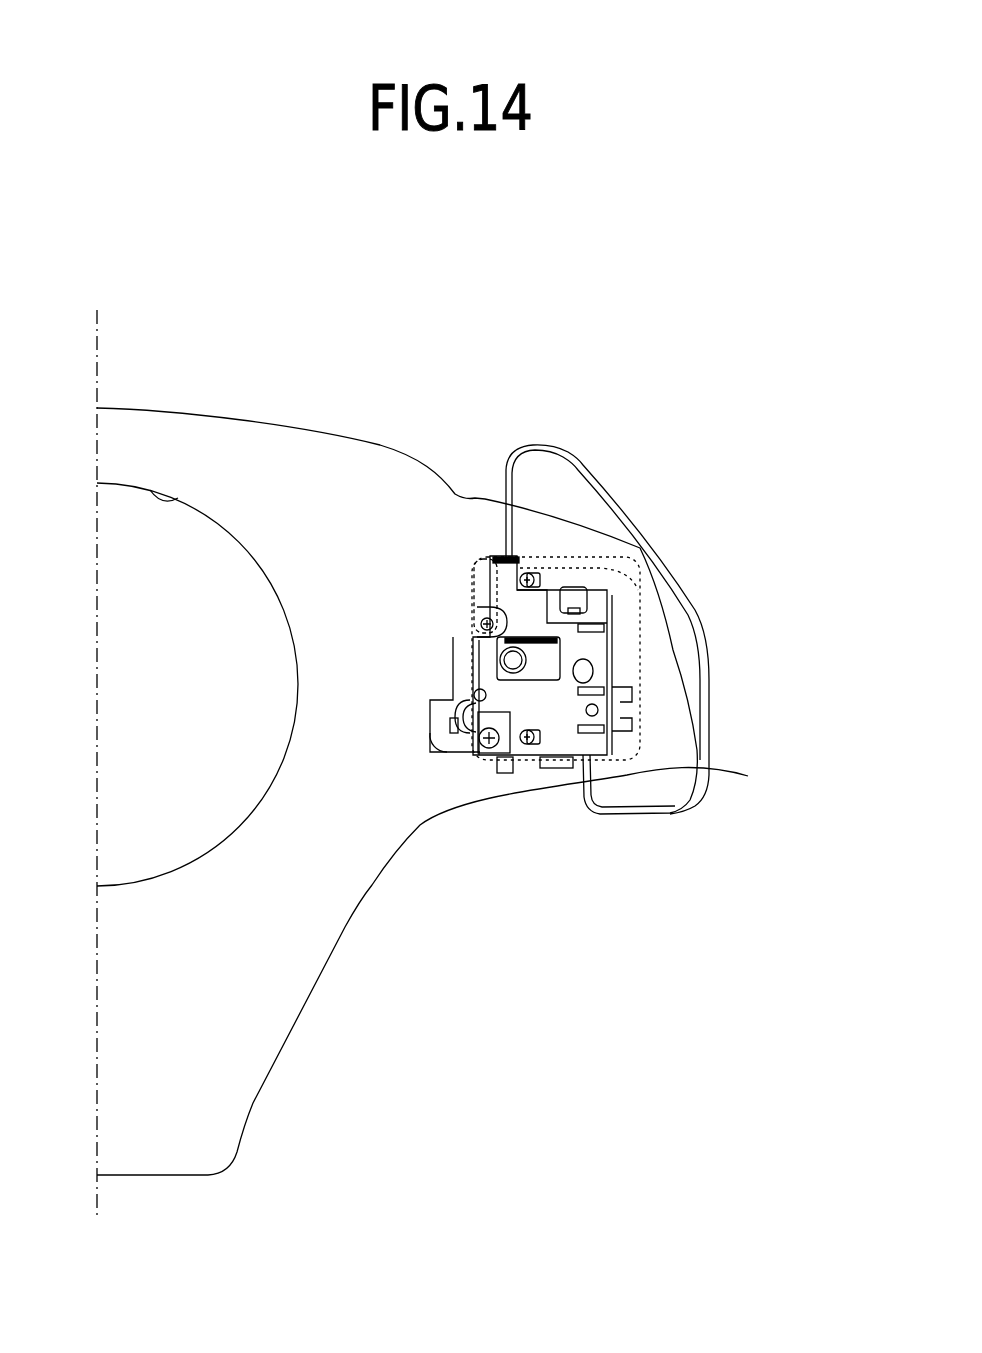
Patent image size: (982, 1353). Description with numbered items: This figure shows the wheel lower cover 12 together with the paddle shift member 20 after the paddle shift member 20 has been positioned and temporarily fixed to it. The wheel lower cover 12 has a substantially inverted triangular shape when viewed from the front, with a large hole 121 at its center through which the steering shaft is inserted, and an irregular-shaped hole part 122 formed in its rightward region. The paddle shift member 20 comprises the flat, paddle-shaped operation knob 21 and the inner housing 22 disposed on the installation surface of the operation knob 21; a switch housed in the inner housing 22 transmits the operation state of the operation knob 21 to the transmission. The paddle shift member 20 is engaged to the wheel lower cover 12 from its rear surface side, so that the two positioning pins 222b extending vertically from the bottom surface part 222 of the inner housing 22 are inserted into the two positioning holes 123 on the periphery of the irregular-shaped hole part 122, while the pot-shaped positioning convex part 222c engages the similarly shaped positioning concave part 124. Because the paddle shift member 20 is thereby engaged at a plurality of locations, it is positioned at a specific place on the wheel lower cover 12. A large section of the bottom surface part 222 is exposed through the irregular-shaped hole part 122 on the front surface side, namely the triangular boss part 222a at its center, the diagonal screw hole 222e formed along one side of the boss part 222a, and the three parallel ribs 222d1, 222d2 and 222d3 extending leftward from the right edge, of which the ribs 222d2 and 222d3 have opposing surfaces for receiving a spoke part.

The wheel lower cover 12 is at (297, 427).
The large hole 121 is at (175, 502).
The irregular-shaped hole part 122 is at (447, 753).
The positioning hole 123 is at (525, 572).
The positioning concave part 124 is at (590, 597).
The paddle shift member 20 is at (603, 440).
The operation knob 21 is at (710, 645).
The inner housing 22 is at (640, 742).
The bottom surface part 222 is at (587, 743).
The boss part 222a is at (550, 658).
The positioning pin 222b is at (545, 573).
The positioning convex part 222c is at (580, 603).
The rib 222d1 is at (580, 622).
The rib 222d2 is at (597, 708).
The rib 222d3 is at (600, 777).
The hole 222e is at (500, 663).